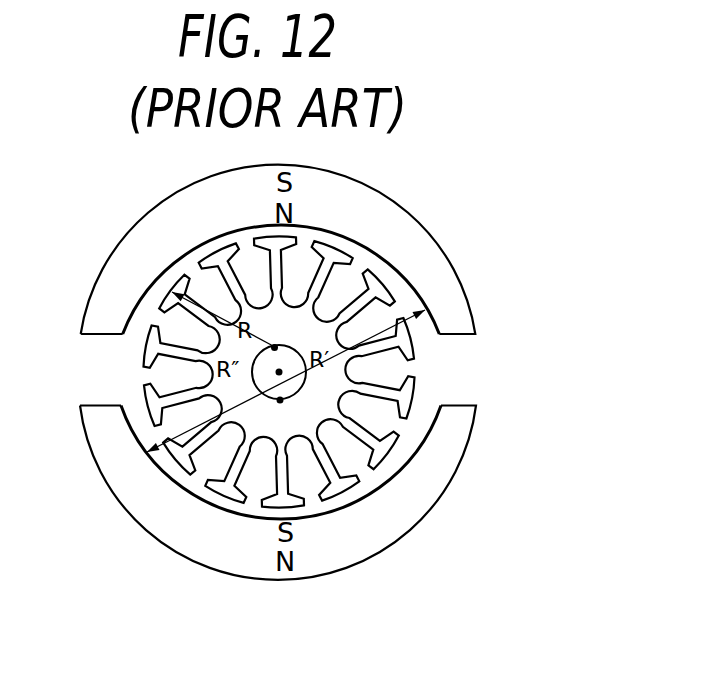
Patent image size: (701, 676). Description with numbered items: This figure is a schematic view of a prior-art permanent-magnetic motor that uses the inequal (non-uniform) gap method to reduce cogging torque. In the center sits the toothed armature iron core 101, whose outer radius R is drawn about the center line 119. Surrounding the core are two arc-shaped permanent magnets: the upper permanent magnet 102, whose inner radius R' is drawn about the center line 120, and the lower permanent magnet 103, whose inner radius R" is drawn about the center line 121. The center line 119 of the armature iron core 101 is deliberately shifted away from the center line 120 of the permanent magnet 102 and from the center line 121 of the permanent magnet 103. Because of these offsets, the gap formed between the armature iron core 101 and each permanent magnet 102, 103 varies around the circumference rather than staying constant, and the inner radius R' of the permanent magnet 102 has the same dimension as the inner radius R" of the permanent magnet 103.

The armature iron core 101 is at (403, 400).
The permanent magnet 102 is at (438, 270).
The permanent magnet 103 is at (412, 513).
The center line of the radius of the armature iron core 119 is at (275, 347).
The center line of the inner radius of permanent magnet 102 120 is at (280, 401).
The center line of the inner radius of permanent magnet 103 121 is at (274, 346).